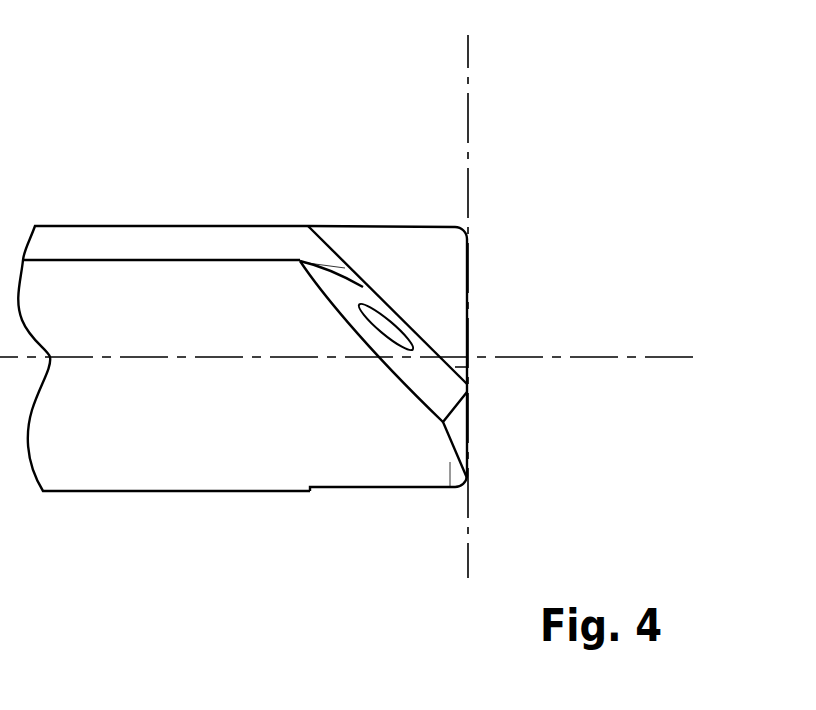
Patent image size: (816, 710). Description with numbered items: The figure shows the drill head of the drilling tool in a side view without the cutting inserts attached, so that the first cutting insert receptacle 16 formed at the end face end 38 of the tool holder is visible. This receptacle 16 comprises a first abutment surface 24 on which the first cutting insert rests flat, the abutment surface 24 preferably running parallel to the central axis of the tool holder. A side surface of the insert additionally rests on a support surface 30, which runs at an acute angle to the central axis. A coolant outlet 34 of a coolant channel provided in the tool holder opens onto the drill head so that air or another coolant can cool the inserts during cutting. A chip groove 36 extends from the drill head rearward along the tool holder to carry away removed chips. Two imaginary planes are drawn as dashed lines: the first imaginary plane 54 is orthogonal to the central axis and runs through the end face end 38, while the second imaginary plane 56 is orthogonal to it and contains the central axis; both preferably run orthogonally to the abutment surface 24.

The first cutting insert receptacle 16 is at (443, 310).
The first abutment surface 24 is at (453, 272).
The support surface 30 is at (355, 249).
The coolant outlet 34 is at (390, 329).
The chip groove 36 is at (148, 245).
The end face end 38 is at (468, 383).
The first imaginary plane 54 is at (468, 56).
The second imaginary plane 56 is at (674, 357).